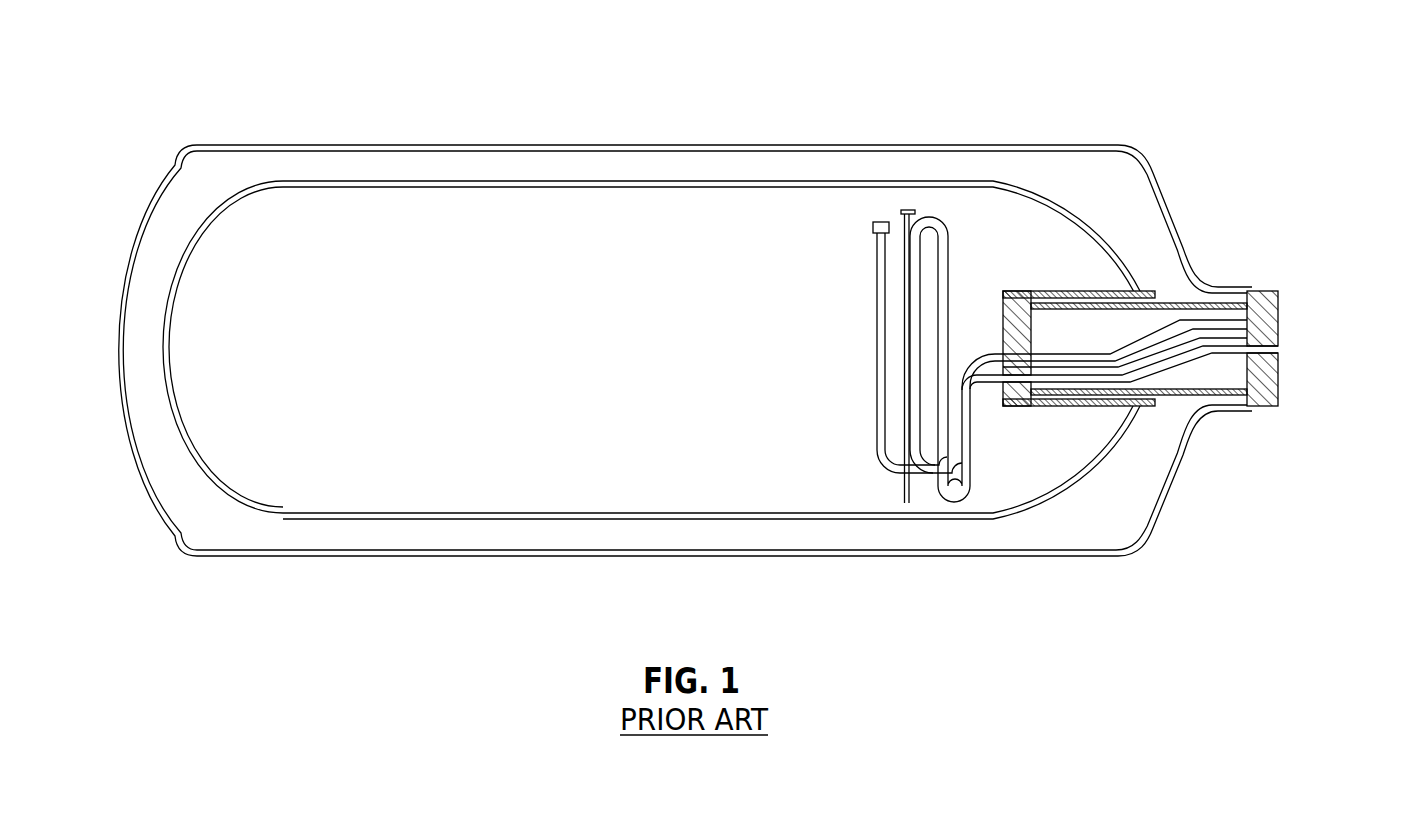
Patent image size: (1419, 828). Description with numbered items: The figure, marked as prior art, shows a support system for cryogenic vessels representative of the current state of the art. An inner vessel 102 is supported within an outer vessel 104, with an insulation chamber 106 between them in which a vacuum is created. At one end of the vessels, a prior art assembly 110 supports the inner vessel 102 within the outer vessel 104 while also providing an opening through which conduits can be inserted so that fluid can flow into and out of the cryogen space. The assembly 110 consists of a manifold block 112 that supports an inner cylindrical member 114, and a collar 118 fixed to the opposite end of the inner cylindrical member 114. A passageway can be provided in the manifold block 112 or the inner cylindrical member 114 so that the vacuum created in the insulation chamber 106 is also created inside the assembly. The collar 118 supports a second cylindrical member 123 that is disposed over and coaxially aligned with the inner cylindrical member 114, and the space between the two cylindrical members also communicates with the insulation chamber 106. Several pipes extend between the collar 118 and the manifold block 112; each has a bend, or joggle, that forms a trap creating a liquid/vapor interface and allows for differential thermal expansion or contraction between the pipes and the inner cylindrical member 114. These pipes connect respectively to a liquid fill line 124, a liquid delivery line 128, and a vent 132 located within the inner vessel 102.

The inner vessel 102 is at (702, 182).
The outer vessel 104 is at (770, 146).
The insulation chamber 106 is at (232, 533).
The prior art assembly 110 is at (1268, 157).
The manifold block 112 is at (1265, 300).
The inner cylindrical member 114 is at (1190, 303).
The collar 118 is at (1013, 317).
The second cylindrical member 123 is at (1100, 291).
The liquid fill line 124 is at (883, 293).
The liquid delivery line 128 is at (915, 350).
The vent 132 is at (905, 383).